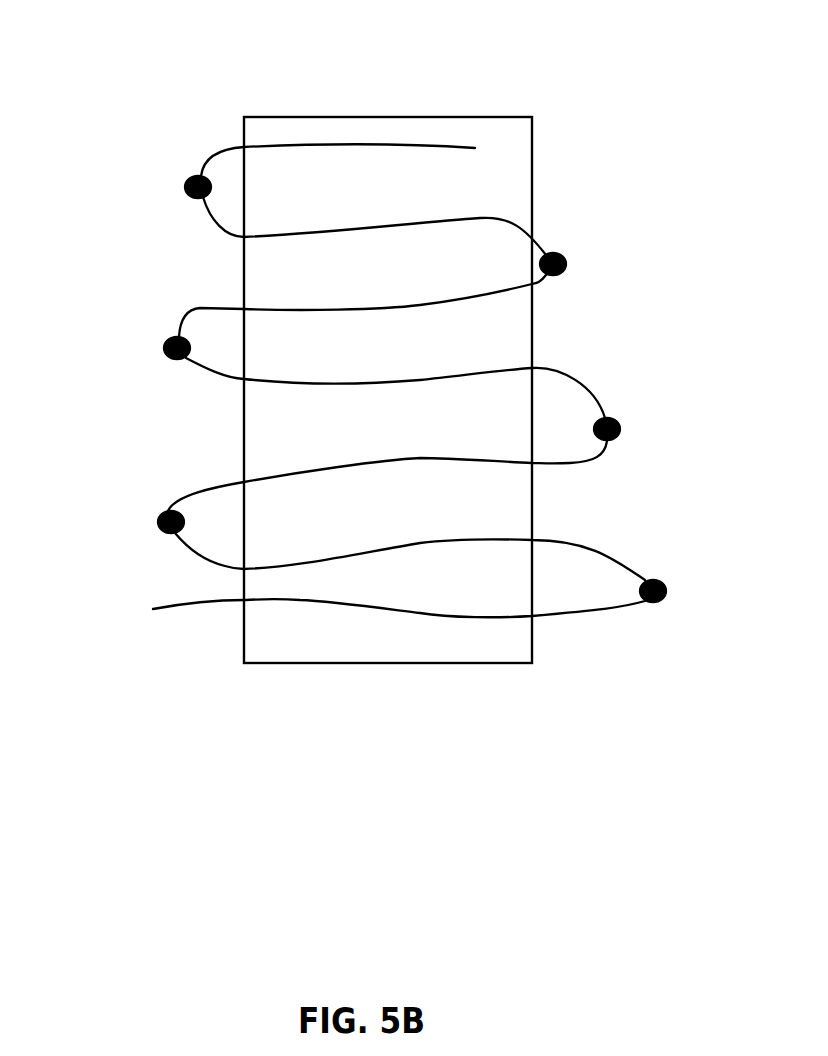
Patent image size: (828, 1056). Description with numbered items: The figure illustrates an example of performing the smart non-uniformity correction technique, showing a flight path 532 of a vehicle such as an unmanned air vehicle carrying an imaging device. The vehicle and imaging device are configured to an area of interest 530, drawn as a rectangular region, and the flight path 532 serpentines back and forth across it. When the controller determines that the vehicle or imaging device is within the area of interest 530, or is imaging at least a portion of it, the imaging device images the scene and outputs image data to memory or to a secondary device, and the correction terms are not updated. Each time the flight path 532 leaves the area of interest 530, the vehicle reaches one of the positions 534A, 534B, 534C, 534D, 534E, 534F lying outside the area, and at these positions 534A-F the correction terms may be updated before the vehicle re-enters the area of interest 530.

The area of interest 530 is at (328, 115).
The flight path 532 is at (428, 145).
The position 534A is at (185, 200).
The position 534B is at (560, 250).
The position 534C is at (163, 355).
The position 534D is at (615, 418).
The position 534E is at (160, 532).
The position 534F is at (657, 578).